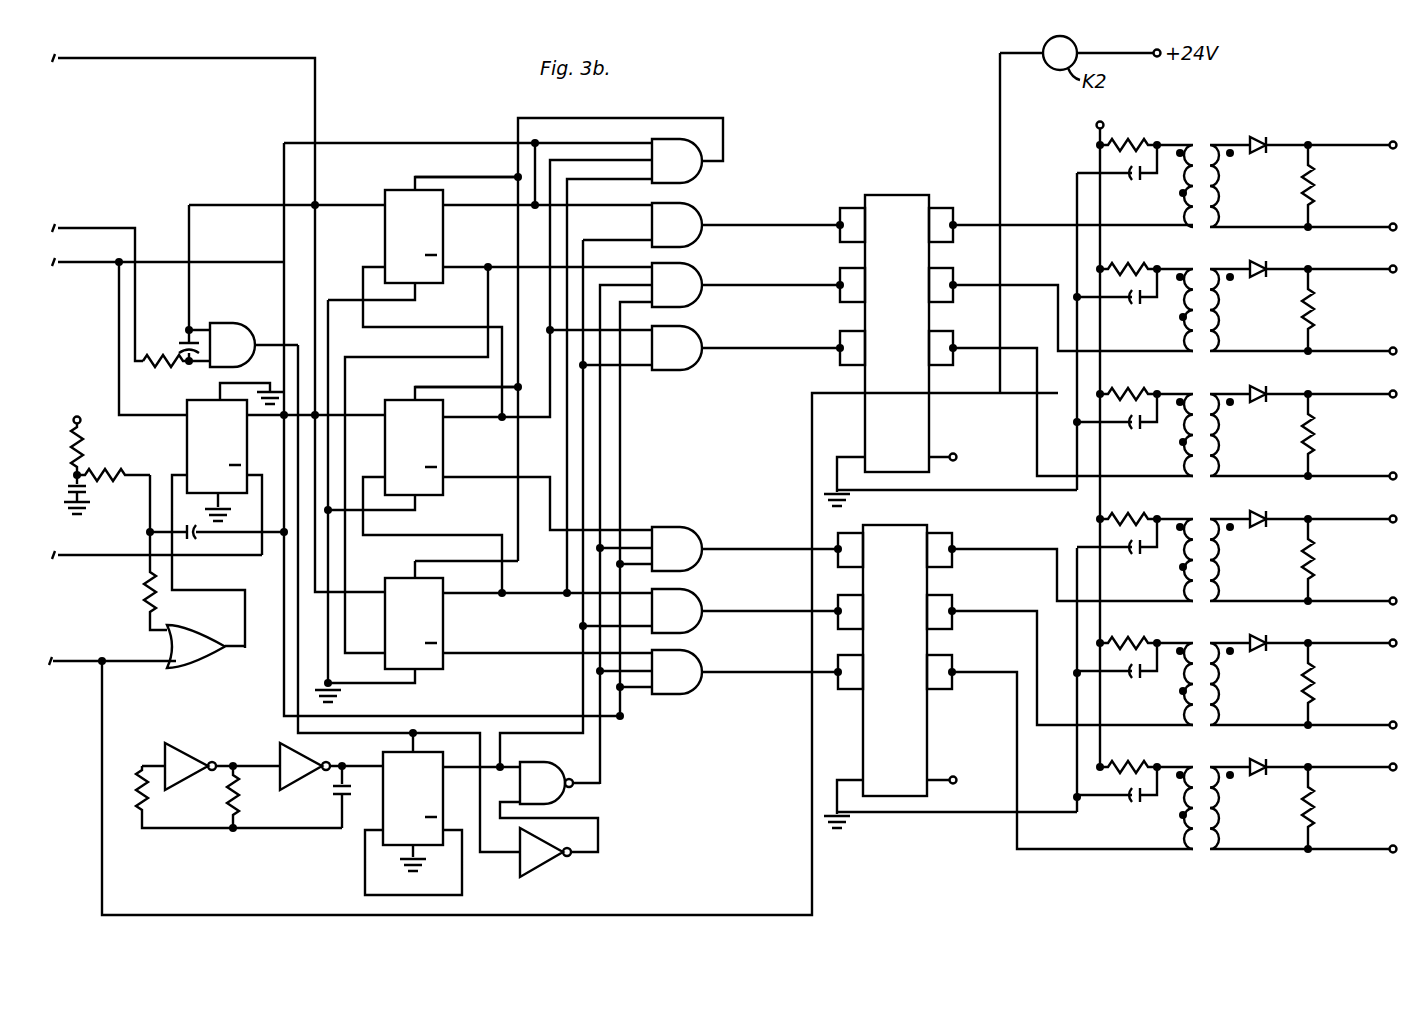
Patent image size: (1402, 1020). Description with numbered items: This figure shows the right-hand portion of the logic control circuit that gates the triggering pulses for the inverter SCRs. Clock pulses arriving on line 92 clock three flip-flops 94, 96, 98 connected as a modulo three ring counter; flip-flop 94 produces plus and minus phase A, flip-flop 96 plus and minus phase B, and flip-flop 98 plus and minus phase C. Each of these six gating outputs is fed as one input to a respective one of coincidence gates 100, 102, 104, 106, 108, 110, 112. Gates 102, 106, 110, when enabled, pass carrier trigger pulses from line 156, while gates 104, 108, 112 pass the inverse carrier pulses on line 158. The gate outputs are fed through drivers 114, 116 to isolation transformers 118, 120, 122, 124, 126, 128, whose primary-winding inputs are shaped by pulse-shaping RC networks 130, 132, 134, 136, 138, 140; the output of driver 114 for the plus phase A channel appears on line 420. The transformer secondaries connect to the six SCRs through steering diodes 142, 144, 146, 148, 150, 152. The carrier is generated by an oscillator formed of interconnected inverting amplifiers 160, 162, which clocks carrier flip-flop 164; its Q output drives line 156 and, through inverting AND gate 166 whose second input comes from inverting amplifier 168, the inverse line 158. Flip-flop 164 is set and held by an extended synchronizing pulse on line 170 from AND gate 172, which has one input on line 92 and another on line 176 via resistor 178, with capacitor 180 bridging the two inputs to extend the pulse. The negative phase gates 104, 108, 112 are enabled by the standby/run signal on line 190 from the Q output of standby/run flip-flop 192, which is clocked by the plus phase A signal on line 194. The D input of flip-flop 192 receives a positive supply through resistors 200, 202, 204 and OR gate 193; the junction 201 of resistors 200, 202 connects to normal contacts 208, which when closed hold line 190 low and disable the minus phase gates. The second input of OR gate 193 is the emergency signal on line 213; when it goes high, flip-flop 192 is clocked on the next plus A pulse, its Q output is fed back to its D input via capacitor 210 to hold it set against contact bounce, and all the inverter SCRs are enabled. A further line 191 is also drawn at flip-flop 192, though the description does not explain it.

The line 92 is at (88, 58).
The flip-flop 94 is at (385, 241).
The flip-flop 96 is at (390, 398).
The flip-flop 98 is at (385, 578).
The coincidence gate 100 is at (700, 178).
The coincidence gate 102 is at (700, 241).
The coincidence gate 104 is at (700, 302).
The coincidence gate 106 is at (700, 366).
The coincidence gate 108 is at (700, 568).
The coincidence gate 110 is at (700, 630).
The coincidence gate 112 is at (700, 692).
The driver 114 is at (895, 195).
The driver 116 is at (938, 510).
The isolation transformer 118 is at (1204, 147).
The isolation transformer 120 is at (1204, 271).
The isolation transformer 122 is at (1204, 396).
The isolation transformer 124 is at (1204, 521).
The isolation transformer 126 is at (1204, 645).
The isolation transformer 128 is at (1204, 769).
The pulse-shaping RC network 130 is at (1112, 186).
The pulse-shaping RC network 132 is at (1112, 310).
The pulse-shaping RC network 134 is at (1112, 435).
The pulse-shaping RC network 136 is at (1112, 560).
The pulse-shaping RC network 138 is at (1112, 684).
The pulse-shaping RC network 140 is at (1112, 808).
The steering diode 142 is at (1260, 154).
The steering diode 144 is at (1260, 278).
The steering diode 146 is at (1260, 403).
The steering diode 148 is at (1260, 528).
The steering diode 150 is at (1260, 652).
The steering diode 152 is at (1260, 776).
The line 156 is at (583, 694).
The line 158 is at (600, 765).
The inverting amplifier 160 is at (152, 795).
The inverting amplifier 162 is at (301, 784).
The carrier flip-flop 164 is at (368, 752).
The inverting AND gate 166 is at (564, 764).
The inverting amplifier 168 is at (536, 876).
The line 170 is at (298, 345).
The AND gate 172 is at (214, 323).
The line 176 is at (84, 228).
The resistor 178 is at (171, 364).
The capacitor 180 is at (179, 343).
The line 190 is at (284, 711).
The input line 191 is at (75, 555).
The inverter standby/run flip-flop 192 is at (180, 400).
The OR gate 193 is at (183, 672).
The line 194 is at (106, 266).
The resistor 200 is at (83, 438).
The junction 201 is at (84, 472).
The resistor 202 is at (126, 475).
The resistor 204 is at (148, 600).
The normal contacts 208 is at (88, 489).
The capacitor 210 is at (197, 539).
The line 213 is at (60, 661).
The line 420 is at (1059, 225).